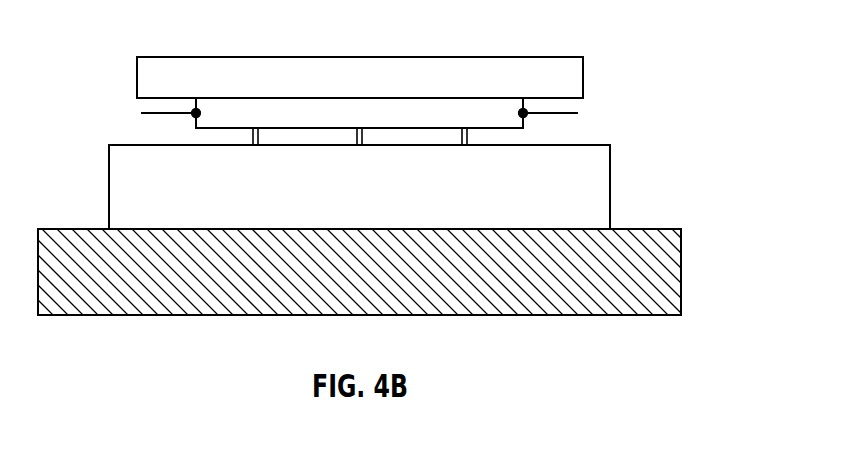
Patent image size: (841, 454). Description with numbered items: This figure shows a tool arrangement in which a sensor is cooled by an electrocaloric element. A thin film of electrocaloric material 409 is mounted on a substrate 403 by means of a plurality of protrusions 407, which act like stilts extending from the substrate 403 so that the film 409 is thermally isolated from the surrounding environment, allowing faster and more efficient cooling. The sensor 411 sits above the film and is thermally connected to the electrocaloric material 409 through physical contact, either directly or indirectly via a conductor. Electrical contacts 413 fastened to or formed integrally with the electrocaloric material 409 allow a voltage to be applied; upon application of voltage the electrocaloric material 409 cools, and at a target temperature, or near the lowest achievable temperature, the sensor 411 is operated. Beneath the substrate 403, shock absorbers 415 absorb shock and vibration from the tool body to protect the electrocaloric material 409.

The substrate 403 is at (610, 170).
The protrusions 407 is at (250, 145).
The thin film of electrocaloric material 409 is at (450, 108).
The sensor 411 is at (587, 63).
The electrical contacts 413 is at (553, 115).
The shock absorbers 415 is at (682, 243).